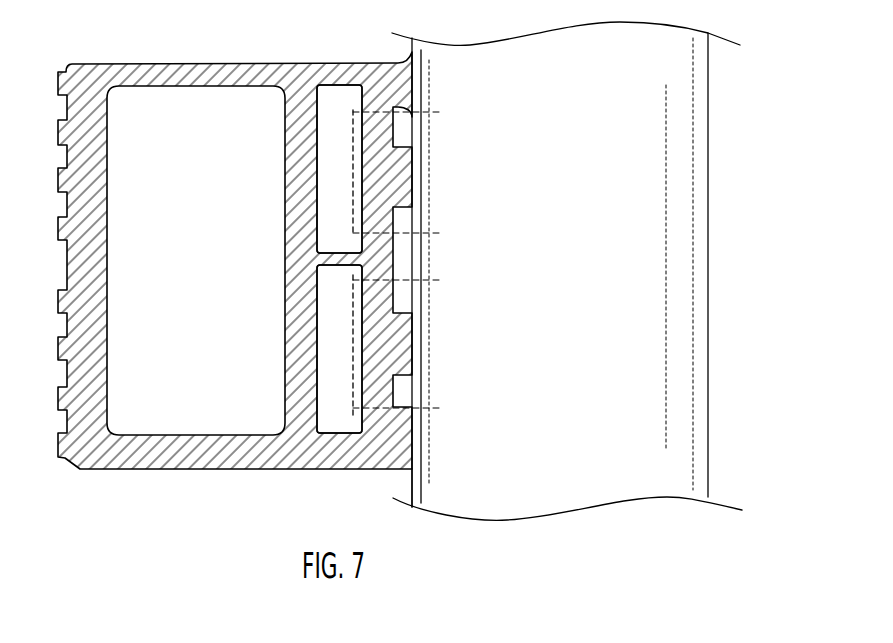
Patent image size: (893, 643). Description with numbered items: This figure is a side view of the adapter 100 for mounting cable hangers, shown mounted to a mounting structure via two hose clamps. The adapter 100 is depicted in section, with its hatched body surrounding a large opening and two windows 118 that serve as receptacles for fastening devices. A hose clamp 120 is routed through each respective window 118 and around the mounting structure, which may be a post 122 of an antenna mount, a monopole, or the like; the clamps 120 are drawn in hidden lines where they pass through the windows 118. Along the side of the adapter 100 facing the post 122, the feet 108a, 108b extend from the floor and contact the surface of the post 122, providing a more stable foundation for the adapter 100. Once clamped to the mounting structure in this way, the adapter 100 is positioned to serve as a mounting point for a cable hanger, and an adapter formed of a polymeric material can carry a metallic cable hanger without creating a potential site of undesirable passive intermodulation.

The adapter 100 is at (238, 478).
The foot 108a is at (405, 96).
The foot 108b is at (405, 437).
The window 118 is at (335, 187).
The hose clamp 120 is at (356, 177).
The post 122 is at (412, 483).